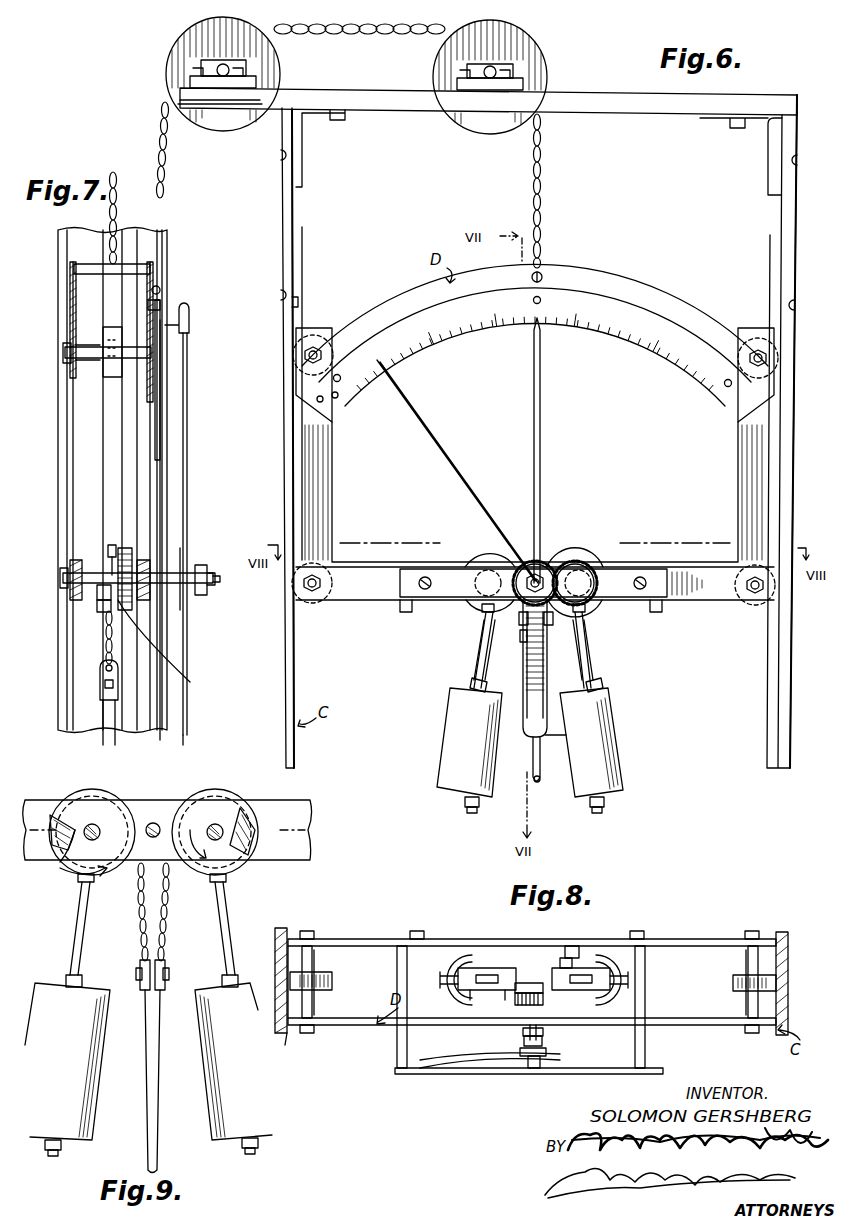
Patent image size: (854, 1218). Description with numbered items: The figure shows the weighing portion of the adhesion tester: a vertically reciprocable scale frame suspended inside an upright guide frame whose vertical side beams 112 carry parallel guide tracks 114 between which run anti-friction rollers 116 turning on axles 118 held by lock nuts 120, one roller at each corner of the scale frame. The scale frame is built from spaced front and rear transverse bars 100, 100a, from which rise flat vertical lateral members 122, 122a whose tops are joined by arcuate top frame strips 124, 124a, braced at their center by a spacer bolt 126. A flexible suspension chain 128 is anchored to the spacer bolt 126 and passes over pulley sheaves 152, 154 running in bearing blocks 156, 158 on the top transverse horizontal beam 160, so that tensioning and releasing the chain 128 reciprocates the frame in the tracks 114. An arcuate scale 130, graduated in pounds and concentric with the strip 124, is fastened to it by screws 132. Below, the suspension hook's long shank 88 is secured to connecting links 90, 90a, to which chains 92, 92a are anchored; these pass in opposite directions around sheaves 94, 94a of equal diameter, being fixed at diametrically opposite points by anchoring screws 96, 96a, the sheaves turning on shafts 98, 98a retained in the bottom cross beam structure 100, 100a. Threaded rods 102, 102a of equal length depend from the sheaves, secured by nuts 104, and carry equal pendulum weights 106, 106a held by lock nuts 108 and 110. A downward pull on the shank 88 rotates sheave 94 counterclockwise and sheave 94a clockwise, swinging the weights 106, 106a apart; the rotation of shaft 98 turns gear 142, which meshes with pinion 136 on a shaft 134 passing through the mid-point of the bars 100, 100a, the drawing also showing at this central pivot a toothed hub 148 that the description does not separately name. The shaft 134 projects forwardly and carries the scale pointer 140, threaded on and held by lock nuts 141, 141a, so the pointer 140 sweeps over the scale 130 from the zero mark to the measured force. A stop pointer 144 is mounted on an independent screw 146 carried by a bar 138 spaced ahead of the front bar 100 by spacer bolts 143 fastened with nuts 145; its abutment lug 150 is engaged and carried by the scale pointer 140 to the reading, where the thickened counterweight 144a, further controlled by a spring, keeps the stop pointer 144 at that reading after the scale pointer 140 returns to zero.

In FIG. 6, the shank 88 is at (543, 780).
In FIG. 7, the shank 88 is at (100, 738).
In FIG. 9, the shank 88 is at (148, 1050).
In FIG. 6, the connecting link 90 is at (549, 672).
In FIG. 7, the connecting link 90 is at (100, 680).
In FIG. 9, the connecting link 90 is at (167, 958).
In FIG. 6, the connecting link 90a is at (524, 665).
In FIG. 9, the connecting link 90a is at (138, 962).
In FIG. 6, the chain 92 is at (592, 624).
In FIG. 7, the chain 92 is at (105, 650).
In FIG. 9, the chain 92 is at (168, 918).
In FIG. 8, the chain 92 is at (630, 985).
In FIG. 6, the chain 92a is at (488, 620).
In FIG. 9, the chain 92a is at (138, 930).
In FIG. 8, the chain 92a is at (436, 980).
In FIG. 6, the sheave 94 is at (592, 560).
In FIG. 7, the sheave 94 is at (118, 552).
In FIG. 9, the sheave 94 is at (213, 825).
In FIG. 8, the sheave 94 is at (580, 965).
In FIG. 6, the sheave 94a is at (468, 556).
In FIG. 9, the sheave 94a is at (110, 820).
In FIG. 8, the sheave 94a is at (486, 965).
In FIG. 9, the anchoring screw 96 is at (258, 835).
In FIG. 9, the anchoring screw 96a is at (70, 862).
In FIG. 6, the shaft 98 is at (593, 583).
In FIG. 8, the shaft 98 is at (566, 958).
In FIG. 6, the shaft 98a is at (470, 570).
In FIG. 9, the shaft 98a is at (68, 880).
In FIG. 8, the shaft 98a is at (505, 968).
In FIG. 6, the transverse bar 100 is at (712, 597).
In FIG. 7, the transverse bar 100 is at (152, 565).
In FIG. 8, the transverse bar 100 is at (700, 1025).
In FIG. 7, the transverse bar 100a is at (68, 570).
In FIG. 9, the transverse bar 100a is at (335, 790).
In FIG. 8, the transverse bar 100a is at (700, 939).
In FIG. 6, the threaded rod 102 is at (590, 654).
In FIG. 9, the threaded rod 102 is at (245, 895).
In FIG. 6, the threaded rod 102a is at (480, 650).
In FIG. 9, the threaded rod 102a is at (73, 940).
In FIG. 6, the nut 104 is at (480, 608).
In FIG. 9, the nut 104 is at (76, 885).
In FIG. 6, the pendulum weight 106 is at (616, 760).
In FIG. 9, the pendulum weight 106 is at (205, 1088).
In FIG. 8, the pendulum weight 106 is at (615, 980).
In FIG. 6, the pendulum weight 106a is at (455, 720).
In FIG. 9, the pendulum weight 106a is at (108, 1135).
In FIG. 8, the pendulum weight 106a is at (452, 980).
In FIG. 6, the lock nut 108 is at (472, 684).
In FIG. 9, the lock nut 108 is at (64, 978).
In FIG. 6, the lock nut 110 is at (462, 805).
In FIG. 9, the lock nut 110 is at (75, 1160).
In FIG. 6, the side beam 112 is at (283, 228).
In FIG. 7, the side beam 112 is at (62, 640).
In FIG. 8, the side beam 112 is at (290, 925).
In FIG. 6, the guide track 114 is at (303, 275).
In FIG. 7, the guide track 114 is at (60, 490).
In FIG. 8, the guide track 114 is at (290, 939).
In FIG. 6, the anti-friction roller 116 is at (313, 335).
In FIG. 7, the anti-friction roller 116 is at (115, 332).
In FIG. 8, the anti-friction roller 116 is at (333, 982).
In FIG. 6, the axle 118 is at (355, 346).
In FIG. 7, the axle 118 is at (88, 362).
In FIG. 8, the axle 118 is at (320, 960).
In FIG. 6, the lock nut 120 is at (322, 345).
In FIG. 7, the lock nut 120 is at (63, 352).
In FIG. 8, the lock nut 120 is at (315, 939).
In FIG. 6, the lateral member 122 is at (320, 462).
In FIG. 7, the lateral member 122 is at (150, 458).
In FIG. 8, the lateral member 122 is at (312, 1033).
In FIG. 7, the lateral member 122a is at (70, 458).
In FIG. 8, the lateral member 122a is at (312, 931).
In FIG. 6, the arcuate top frame strip 124 is at (648, 302).
In FIG. 7, the arcuate top frame strip 124 is at (160, 290).
In FIG. 7, the arcuate top frame strip 124a is at (70, 306).
In FIG. 6, the spacer bolt 126 is at (542, 276).
In FIG. 7, the spacer bolt 126 is at (130, 270).
In FIG. 6, the suspension chain 128 is at (365, 38).
In FIG. 7, the suspension chain 128 is at (118, 212).
In FIG. 6, the arcuate scale 130 is at (600, 340).
In FIG. 7, the arcuate scale 130 is at (160, 300).
In FIG. 6, the screw 132 is at (541, 300).
In FIG. 7, the screw 132 is at (160, 375).
In FIG. 7, the shaft 134 is at (85, 592).
In FIG. 9, the shaft 134 is at (155, 823).
In FIG. 8, the shaft 134 is at (572, 946).
In FIG. 6, the pinion 136 is at (432, 583).
In FIG. 7, the pinion 136 is at (134, 552).
In FIG. 8, the pinion 136 is at (515, 1000).
In FIG. 6, the bar 138 is at (642, 575).
In FIG. 7, the bar 138 is at (208, 598).
In FIG. 8, the bar 138 is at (640, 1076).
In FIG. 6, the scale pointer 140 is at (442, 445).
In FIG. 7, the scale pointer 140 is at (163, 490).
In FIG. 8, the scale pointer 140 is at (470, 1062).
In FIG. 7, the lock nut 141 is at (150, 598).
In FIG. 8, the lock nut 141 is at (540, 1040).
In FIG. 7, the lock nut 141a is at (112, 612).
In FIG. 8, the lock nut 141a is at (523, 1035).
In FIG. 6, the gear 142 is at (580, 560).
In FIG. 7, the gear 142 is at (168, 647).
In FIG. 8, the gear 142 is at (540, 1005).
In FIG. 6, the spacer bolt 143 is at (418, 606).
In FIG. 8, the spacer bolt 143 is at (395, 1038).
In FIG. 6, the stop pointer 144 is at (542, 446).
In FIG. 7, the stop pointer 144 is at (189, 400).
In FIG. 8, the stop pointer 144 is at (530, 1068).
In FIG. 6, the counterweight 144a is at (574, 735).
In FIG. 7, the counterweight 144a is at (187, 712).
In FIG. 8, the nut 145 is at (416, 931).
In FIG. 7, the mounting screw 146 is at (190, 568).
In FIG. 8, the mounting screw 146 is at (546, 1052).
In FIG. 6, the pivot gear 148 is at (537, 565).
In FIG. 8, the pivot gear 148 is at (530, 1046).
In FIG. 7, the abutment lug 150 is at (190, 318).
In FIG. 6, the pulley sheave 152 is at (548, 48).
In FIG. 7, the pulley sheave 152 is at (182, 600).
In FIG. 8, the pulley sheave 152 is at (512, 1056).
In FIG. 6, the pulley sheave 154 is at (203, 95).
In FIG. 6, the bearing block 156 is at (526, 84).
In FIG. 6, the bearing block 158 is at (200, 104).
In FIG. 6, the top transverse horizontal beam 160 is at (668, 113).